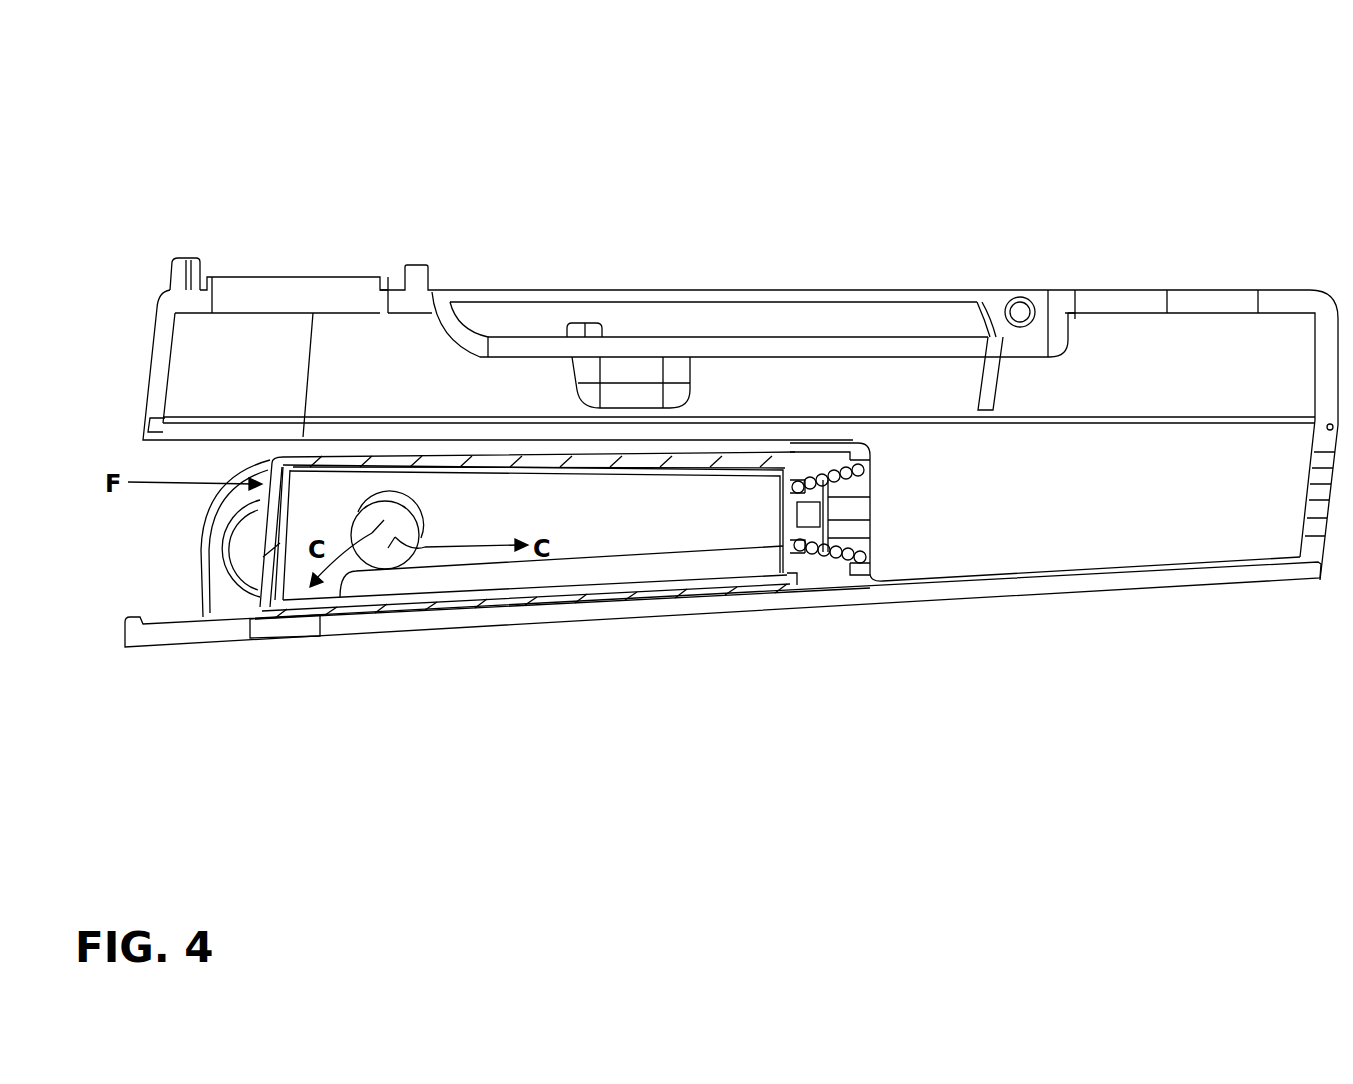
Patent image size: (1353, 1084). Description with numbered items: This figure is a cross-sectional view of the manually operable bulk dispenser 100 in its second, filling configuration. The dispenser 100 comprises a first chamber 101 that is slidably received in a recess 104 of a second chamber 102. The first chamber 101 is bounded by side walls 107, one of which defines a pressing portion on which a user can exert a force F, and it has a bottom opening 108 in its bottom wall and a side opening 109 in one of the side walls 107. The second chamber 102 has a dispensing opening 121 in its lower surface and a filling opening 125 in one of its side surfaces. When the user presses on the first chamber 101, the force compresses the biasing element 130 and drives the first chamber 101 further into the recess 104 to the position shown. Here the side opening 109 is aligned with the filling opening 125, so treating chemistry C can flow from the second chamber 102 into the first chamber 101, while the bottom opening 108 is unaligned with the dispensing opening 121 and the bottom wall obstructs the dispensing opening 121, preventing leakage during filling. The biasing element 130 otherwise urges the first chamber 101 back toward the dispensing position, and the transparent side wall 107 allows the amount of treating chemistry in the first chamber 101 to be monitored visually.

The manually operable bulk dispenser 100 is at (181, 116).
The first chamber 101 is at (250, 663).
The second chamber 102 is at (114, 313).
The recess 104 is at (190, 590).
The side walls 107 is at (270, 533).
The bottom opening 108 is at (396, 608).
The side opening 109 is at (437, 548).
The dispensing opening 121 is at (292, 632).
The filling opening 125 is at (420, 513).
The biasing element 130 is at (835, 555).